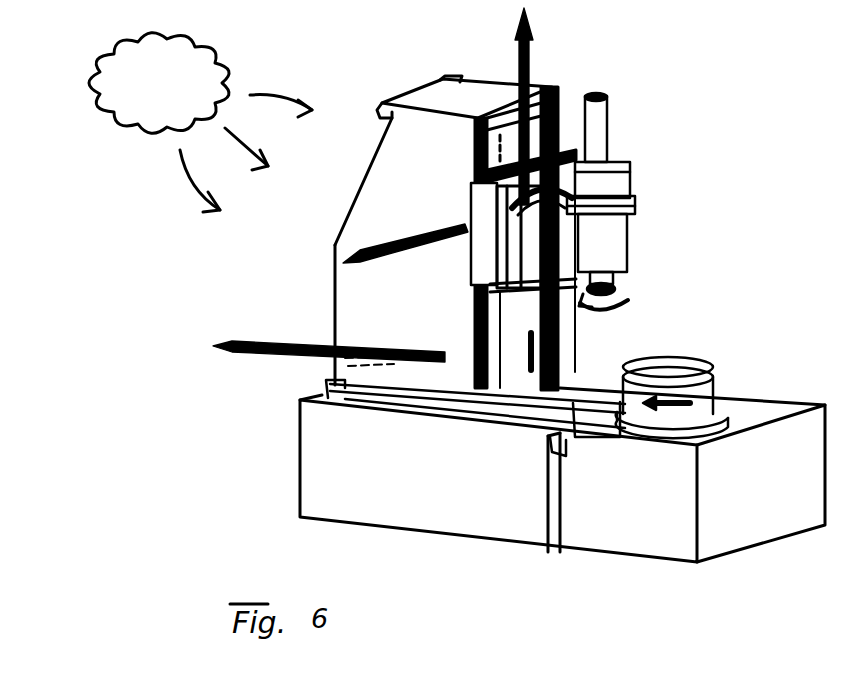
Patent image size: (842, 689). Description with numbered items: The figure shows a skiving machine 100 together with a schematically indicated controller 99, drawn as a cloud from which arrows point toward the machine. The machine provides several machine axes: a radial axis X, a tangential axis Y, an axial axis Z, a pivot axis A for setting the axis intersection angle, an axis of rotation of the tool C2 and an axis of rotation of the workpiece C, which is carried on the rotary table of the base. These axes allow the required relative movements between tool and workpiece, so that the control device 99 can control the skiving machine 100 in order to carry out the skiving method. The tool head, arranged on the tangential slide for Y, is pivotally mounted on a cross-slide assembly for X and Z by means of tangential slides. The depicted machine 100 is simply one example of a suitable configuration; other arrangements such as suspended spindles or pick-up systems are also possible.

The skiving machine 100 is at (818, 90).
The controller 99 is at (200, 122).
The axis of rotation of the tool C2 is at (602, 328).
The axis of rotation of the workpiece C is at (672, 414).
The axial machine axis Z is at (503, 104).
The tangential machine axis Y is at (405, 264).
The radial machine axis X is at (318, 332).
The pivot axis A is at (521, 333).